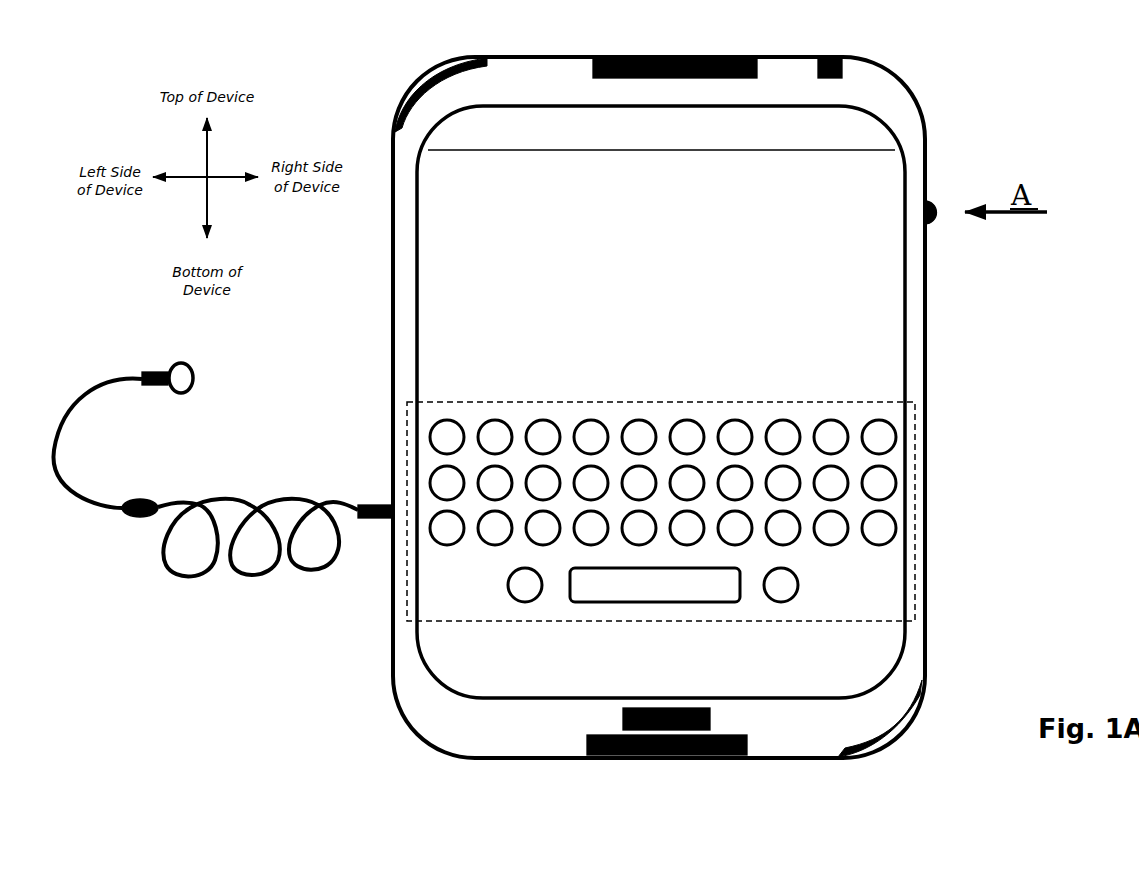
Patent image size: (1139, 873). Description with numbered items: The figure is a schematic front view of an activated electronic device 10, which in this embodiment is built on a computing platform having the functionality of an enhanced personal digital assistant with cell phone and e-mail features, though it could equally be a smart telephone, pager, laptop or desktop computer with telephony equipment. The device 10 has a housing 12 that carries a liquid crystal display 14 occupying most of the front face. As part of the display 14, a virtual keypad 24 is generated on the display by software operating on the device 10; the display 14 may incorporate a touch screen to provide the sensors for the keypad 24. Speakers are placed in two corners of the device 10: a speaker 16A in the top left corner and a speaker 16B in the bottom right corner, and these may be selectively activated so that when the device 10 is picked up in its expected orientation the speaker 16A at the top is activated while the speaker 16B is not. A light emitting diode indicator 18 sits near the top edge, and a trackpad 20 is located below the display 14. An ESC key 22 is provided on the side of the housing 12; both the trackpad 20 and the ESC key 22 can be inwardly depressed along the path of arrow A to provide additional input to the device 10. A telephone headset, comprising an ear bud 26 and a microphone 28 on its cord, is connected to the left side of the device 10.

The electronic device 10 is at (360, 693).
The housing 12 is at (905, 680).
The liquid crystal display (LCD) 14 is at (480, 358).
The speaker 16A is at (598, 55).
The speaker 16B is at (838, 769).
The light emitting diode (LED) indicator 18 is at (855, 71).
The trackpad 20 is at (600, 718).
The ESC (escape) key 22 is at (945, 230).
The virtual keypad 24 is at (910, 494).
The ear bud 26 is at (200, 368).
The microphone 28 is at (160, 495).